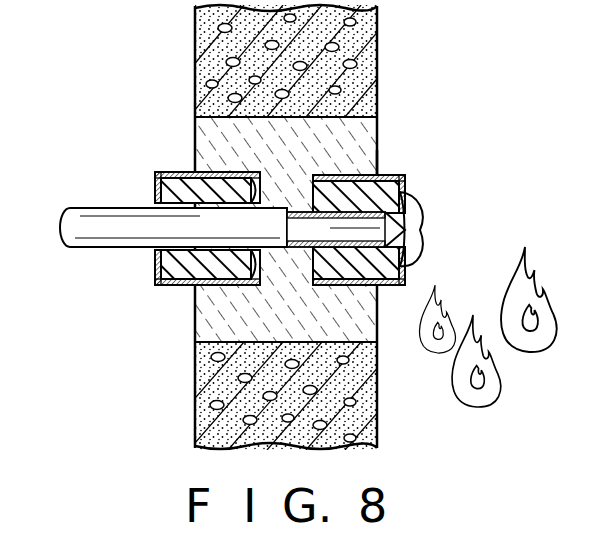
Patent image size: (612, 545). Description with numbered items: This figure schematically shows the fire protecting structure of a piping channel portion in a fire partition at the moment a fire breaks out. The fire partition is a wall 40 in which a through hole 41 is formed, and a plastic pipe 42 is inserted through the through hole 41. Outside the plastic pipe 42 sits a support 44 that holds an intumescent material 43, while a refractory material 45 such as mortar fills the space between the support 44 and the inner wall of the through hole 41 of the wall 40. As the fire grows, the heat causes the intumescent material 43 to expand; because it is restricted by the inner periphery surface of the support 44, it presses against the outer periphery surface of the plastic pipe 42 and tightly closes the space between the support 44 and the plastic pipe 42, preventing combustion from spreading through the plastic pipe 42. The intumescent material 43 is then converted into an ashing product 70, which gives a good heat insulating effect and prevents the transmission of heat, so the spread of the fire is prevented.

The wall 40 is at (379, 40).
The through hole 41 is at (379, 128).
The plastic pipe 42 is at (80, 208).
The intumescent material 43 is at (158, 188).
The support 44 is at (166, 172).
The refractory material 45 is at (383, 168).
The ashing product 70 is at (415, 230).